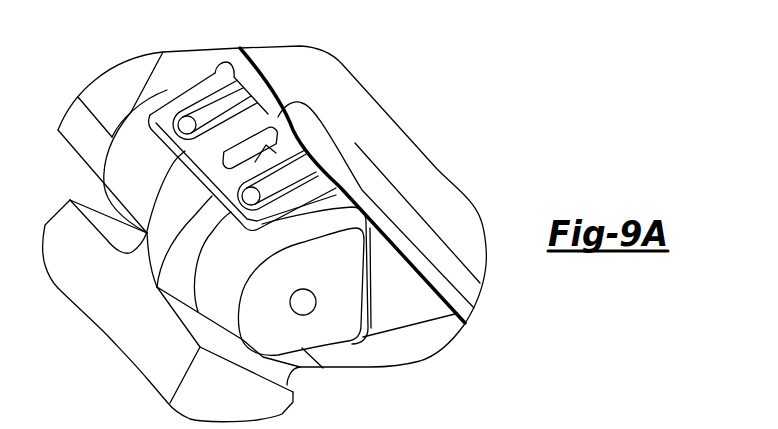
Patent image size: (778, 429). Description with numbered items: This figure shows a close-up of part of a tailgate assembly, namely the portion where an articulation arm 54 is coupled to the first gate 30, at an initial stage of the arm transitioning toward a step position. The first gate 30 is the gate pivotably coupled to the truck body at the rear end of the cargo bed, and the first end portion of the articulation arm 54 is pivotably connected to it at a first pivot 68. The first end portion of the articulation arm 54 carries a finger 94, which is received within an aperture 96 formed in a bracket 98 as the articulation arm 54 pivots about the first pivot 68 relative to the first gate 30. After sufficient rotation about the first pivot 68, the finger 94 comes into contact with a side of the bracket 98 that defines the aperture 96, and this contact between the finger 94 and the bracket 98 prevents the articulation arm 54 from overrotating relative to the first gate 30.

The first gate 30 is at (420, 180).
The articulation arm 54 is at (152, 340).
The first pivot 68 is at (305, 303).
The finger 94 is at (320, 140).
The aperture 96 is at (268, 135).
The bracket 98 is at (262, 97).